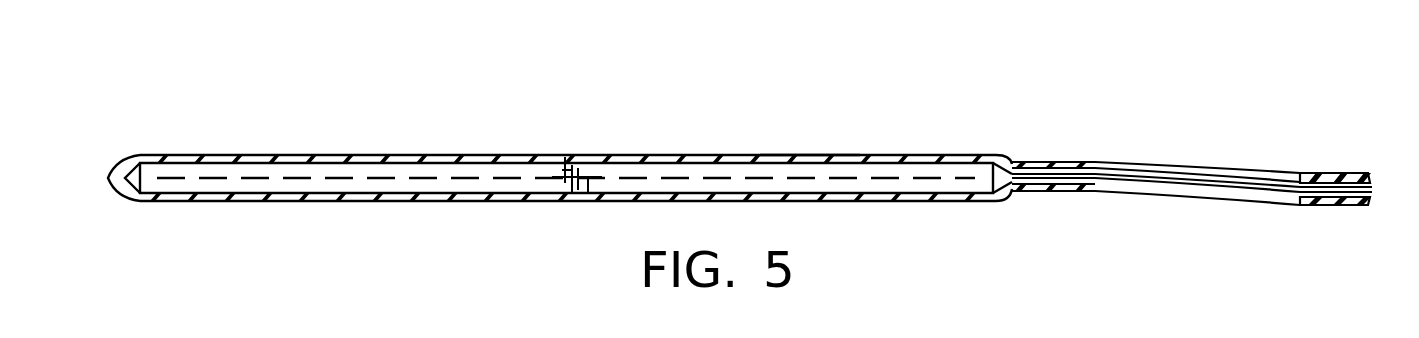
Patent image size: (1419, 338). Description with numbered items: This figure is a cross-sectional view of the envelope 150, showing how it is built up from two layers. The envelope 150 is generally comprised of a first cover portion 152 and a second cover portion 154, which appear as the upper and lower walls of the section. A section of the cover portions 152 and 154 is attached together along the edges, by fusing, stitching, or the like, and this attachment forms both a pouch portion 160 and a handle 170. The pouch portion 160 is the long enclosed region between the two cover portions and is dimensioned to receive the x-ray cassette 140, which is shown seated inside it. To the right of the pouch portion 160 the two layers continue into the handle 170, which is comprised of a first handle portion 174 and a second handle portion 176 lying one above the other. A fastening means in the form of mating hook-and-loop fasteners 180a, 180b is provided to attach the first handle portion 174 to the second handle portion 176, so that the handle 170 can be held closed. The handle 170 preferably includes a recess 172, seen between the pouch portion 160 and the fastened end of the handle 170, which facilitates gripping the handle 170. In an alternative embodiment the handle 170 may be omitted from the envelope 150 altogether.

The x-ray cassette 140 is at (533, 172).
The envelope 150 is at (670, 150).
The first cover portion 152 is at (432, 155).
The second cover portion 154 is at (440, 203).
The pouch portion 160 is at (805, 153).
The handle 170 is at (1345, 168).
The recess 172 is at (1190, 175).
The first handle portion 174 is at (1317, 173).
The second handle portion 176 is at (1318, 207).
The hook-and-loop fastener 180a is at (1035, 163).
The hook-and-loop fastener 180b is at (1070, 186).